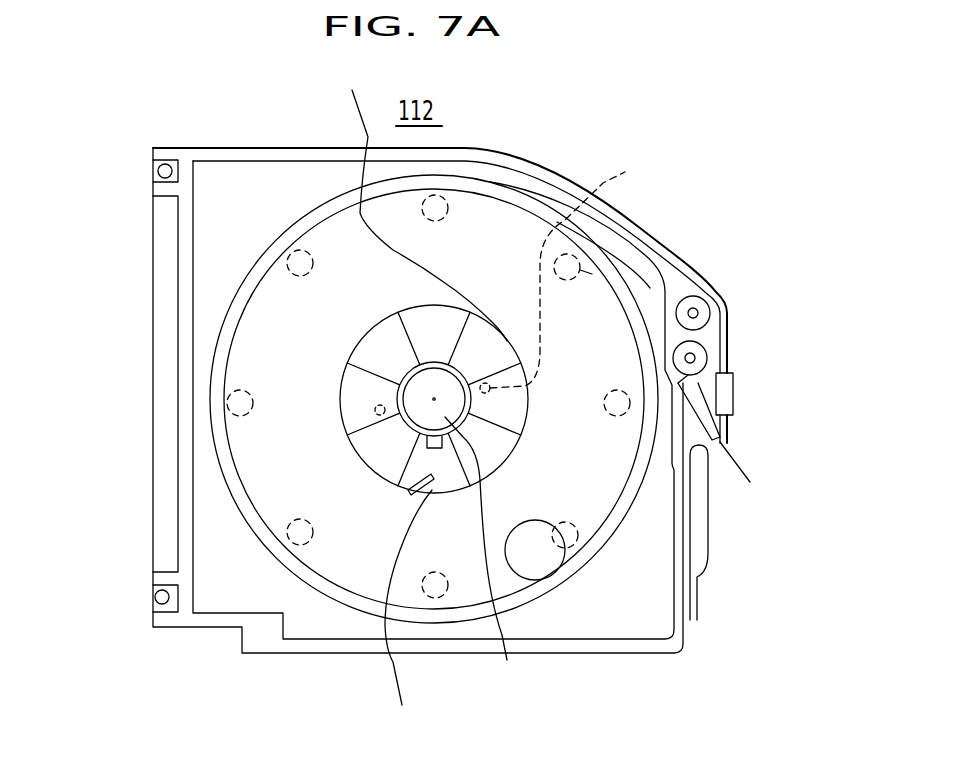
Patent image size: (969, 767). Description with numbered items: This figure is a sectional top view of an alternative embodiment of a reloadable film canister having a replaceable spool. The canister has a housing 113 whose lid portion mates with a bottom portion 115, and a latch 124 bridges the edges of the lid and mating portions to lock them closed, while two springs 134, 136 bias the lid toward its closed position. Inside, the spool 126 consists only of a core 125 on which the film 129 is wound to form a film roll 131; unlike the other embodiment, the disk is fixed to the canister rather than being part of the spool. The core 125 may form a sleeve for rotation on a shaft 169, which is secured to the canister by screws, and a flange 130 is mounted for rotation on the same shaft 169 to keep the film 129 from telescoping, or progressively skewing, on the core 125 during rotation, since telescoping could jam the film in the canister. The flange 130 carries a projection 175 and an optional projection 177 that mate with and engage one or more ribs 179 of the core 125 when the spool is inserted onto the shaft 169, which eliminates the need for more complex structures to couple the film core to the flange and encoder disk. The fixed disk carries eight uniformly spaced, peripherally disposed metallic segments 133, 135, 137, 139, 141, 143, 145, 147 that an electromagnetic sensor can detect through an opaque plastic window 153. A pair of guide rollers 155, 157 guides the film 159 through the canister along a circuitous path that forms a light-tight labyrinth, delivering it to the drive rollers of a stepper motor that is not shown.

The housing 113 is at (210, 147).
The mating or bottom portion 115 is at (700, 615).
The latch 124 is at (736, 393).
The core portion 125 is at (620, 416).
The spool 126 is at (592, 274).
The film 129 is at (507, 583).
The flange 130 is at (493, 183).
The film roll 131 is at (353, 192).
The segment 133 is at (437, 196).
The spring 134 is at (156, 173).
The segment 135 is at (620, 268).
The spring 136 is at (156, 603).
The segment 137 is at (712, 478).
The segment 139 is at (578, 523).
The segment 141 is at (440, 597).
The segment 143 is at (313, 535).
The segment 145 is at (227, 407).
The segment 147 is at (300, 276).
The opaque plastic window 153 is at (560, 553).
The guide roller 155 is at (700, 313).
The guide roller 157 is at (697, 358).
The film 159 is at (625, 252).
The shaft 169 is at (507, 660).
The projection 175 is at (376, 412).
The optional projection 177 is at (577, 268).
The rib 179 is at (420, 398).